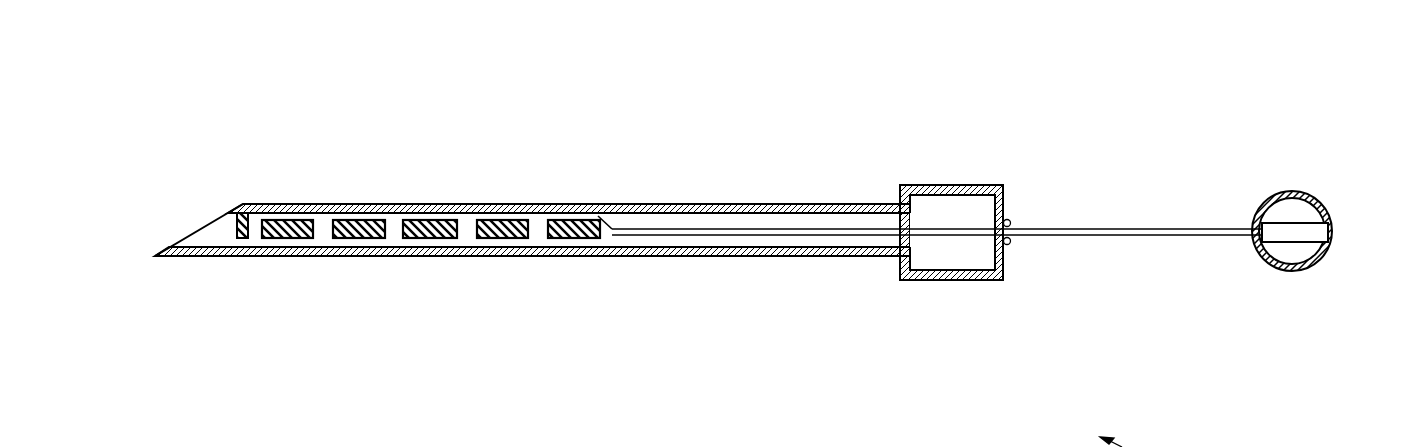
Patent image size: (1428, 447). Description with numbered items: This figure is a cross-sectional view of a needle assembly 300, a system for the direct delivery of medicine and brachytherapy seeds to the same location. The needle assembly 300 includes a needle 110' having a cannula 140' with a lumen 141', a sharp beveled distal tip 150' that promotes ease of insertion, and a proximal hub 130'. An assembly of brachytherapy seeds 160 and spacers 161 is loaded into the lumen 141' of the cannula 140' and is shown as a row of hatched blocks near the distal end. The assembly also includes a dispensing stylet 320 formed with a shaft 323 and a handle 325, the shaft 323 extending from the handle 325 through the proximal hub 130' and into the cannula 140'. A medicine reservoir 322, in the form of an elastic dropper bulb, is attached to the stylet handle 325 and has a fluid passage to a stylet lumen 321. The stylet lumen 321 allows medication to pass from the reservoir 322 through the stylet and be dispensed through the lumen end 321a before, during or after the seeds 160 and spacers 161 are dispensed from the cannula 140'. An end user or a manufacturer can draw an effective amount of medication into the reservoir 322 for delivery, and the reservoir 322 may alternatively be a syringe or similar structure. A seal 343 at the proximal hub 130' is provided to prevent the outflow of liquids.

The needle assembly 300 is at (835, 112).
The needle 110' is at (766, 246).
The cannula 140' is at (610, 208).
The lumen 141' is at (569, 189).
The distal tip 150' is at (199, 202).
The spacers 161 is at (283, 222).
The brachytherapy seeds 160 is at (358, 228).
The proximal hub 130' is at (951, 208).
The seal 343 is at (1012, 222).
The stylet lumen 321 is at (1178, 229).
The lumen end 321a is at (598, 216).
The shaft 323 is at (1074, 229).
The dispensing stylet 320 is at (1072, 236).
The medicine reservoir 322 is at (1265, 262).
The handle 325 is at (1332, 233).